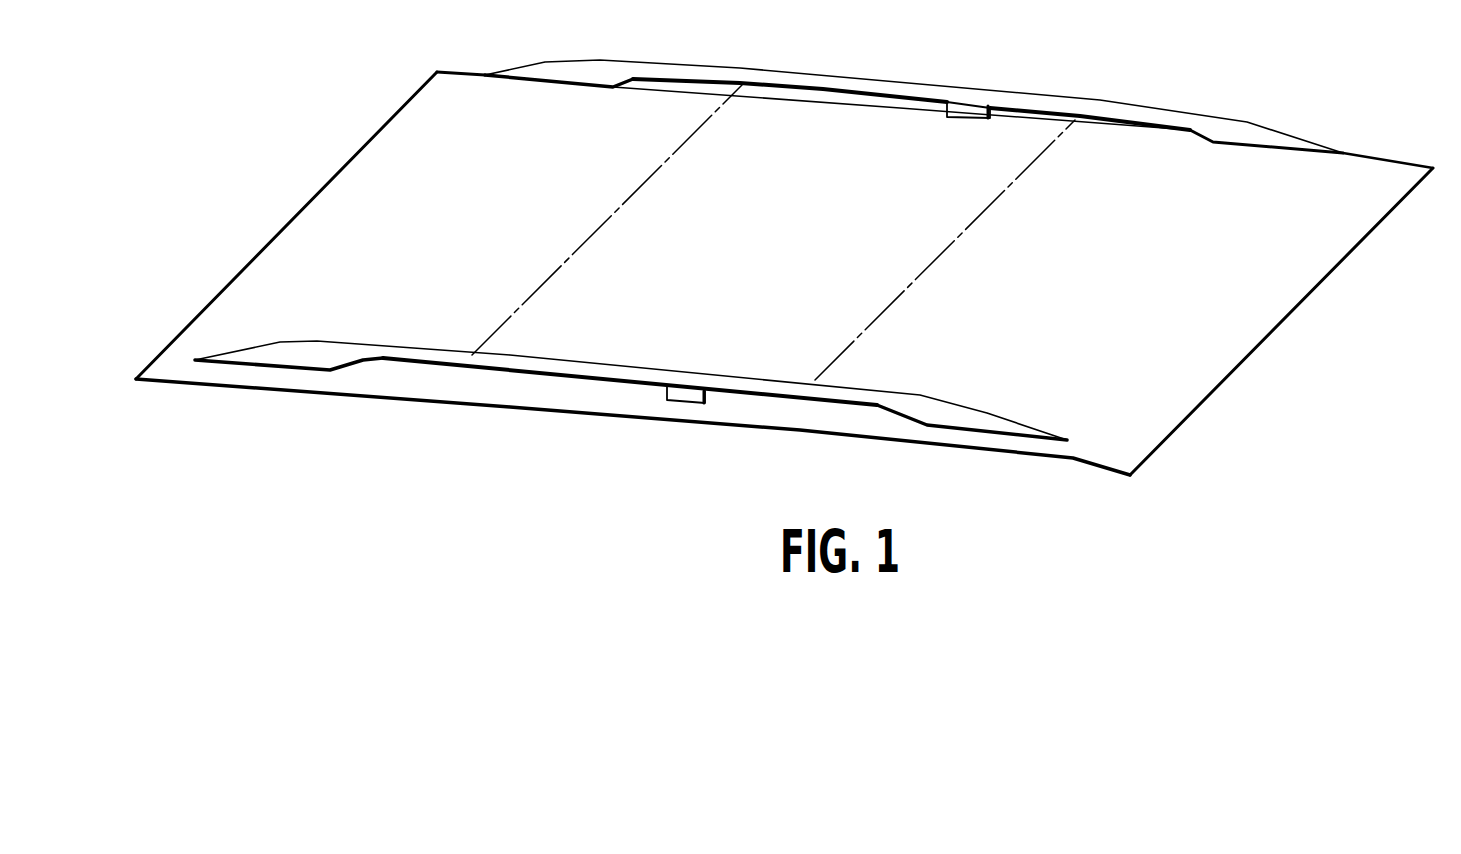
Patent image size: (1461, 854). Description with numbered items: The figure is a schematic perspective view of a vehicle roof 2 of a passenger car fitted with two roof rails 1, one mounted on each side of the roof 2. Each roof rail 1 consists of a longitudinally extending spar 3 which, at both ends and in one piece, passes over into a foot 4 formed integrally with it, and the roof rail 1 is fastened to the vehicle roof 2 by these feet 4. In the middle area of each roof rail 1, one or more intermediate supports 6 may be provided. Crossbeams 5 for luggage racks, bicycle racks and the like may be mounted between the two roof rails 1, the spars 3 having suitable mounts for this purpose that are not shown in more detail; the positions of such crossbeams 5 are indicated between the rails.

The roof rail 1 is at (820, 88).
The vehicle roof 2 is at (860, 440).
The spar 3 is at (1023, 92).
The foot 4 is at (597, 71).
The crossbeam 5 is at (550, 278).
The intermediate support 6 is at (967, 110).